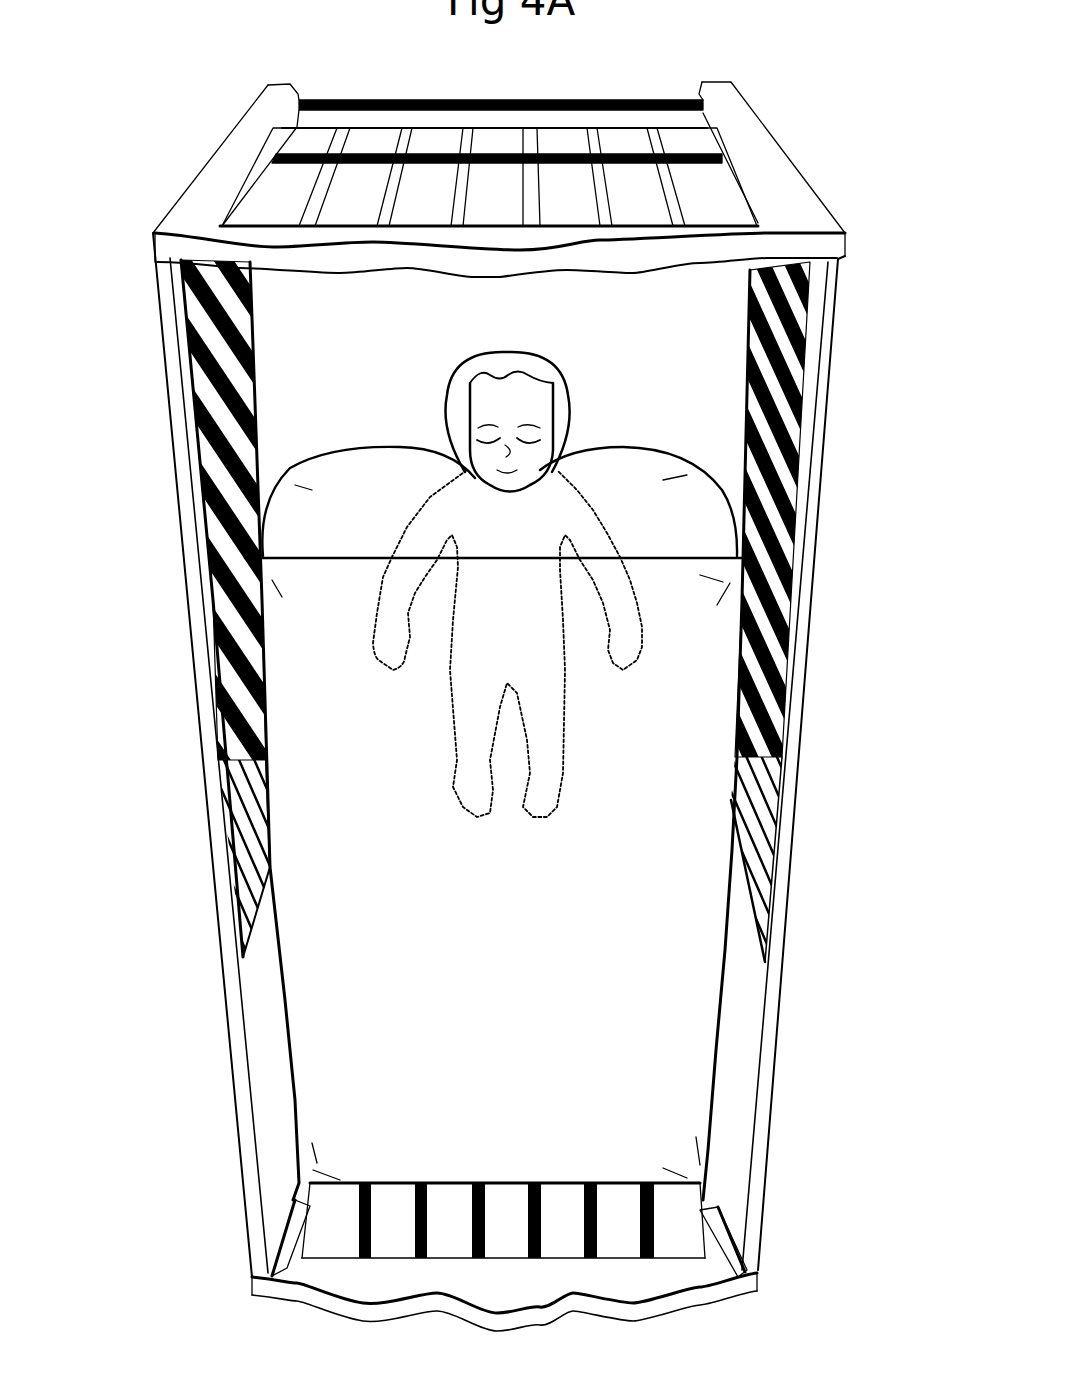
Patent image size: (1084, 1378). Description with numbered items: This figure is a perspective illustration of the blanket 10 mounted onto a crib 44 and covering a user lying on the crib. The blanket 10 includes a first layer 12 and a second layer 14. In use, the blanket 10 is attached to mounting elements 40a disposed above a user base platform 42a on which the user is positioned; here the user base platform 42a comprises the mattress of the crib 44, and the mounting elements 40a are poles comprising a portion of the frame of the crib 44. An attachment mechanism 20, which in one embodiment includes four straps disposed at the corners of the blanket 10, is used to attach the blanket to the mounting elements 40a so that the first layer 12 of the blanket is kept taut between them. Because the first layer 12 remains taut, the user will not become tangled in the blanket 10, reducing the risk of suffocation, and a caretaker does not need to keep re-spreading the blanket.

The blanket 10 is at (503, 625).
The first layer 12 is at (708, 720).
The second layer 14 is at (683, 517).
The attachment mechanism 20 is at (240, 564).
The mounting elements 40a is at (237, 602).
The user base platform 42a is at (707, 338).
The crib 44 is at (780, 1067).